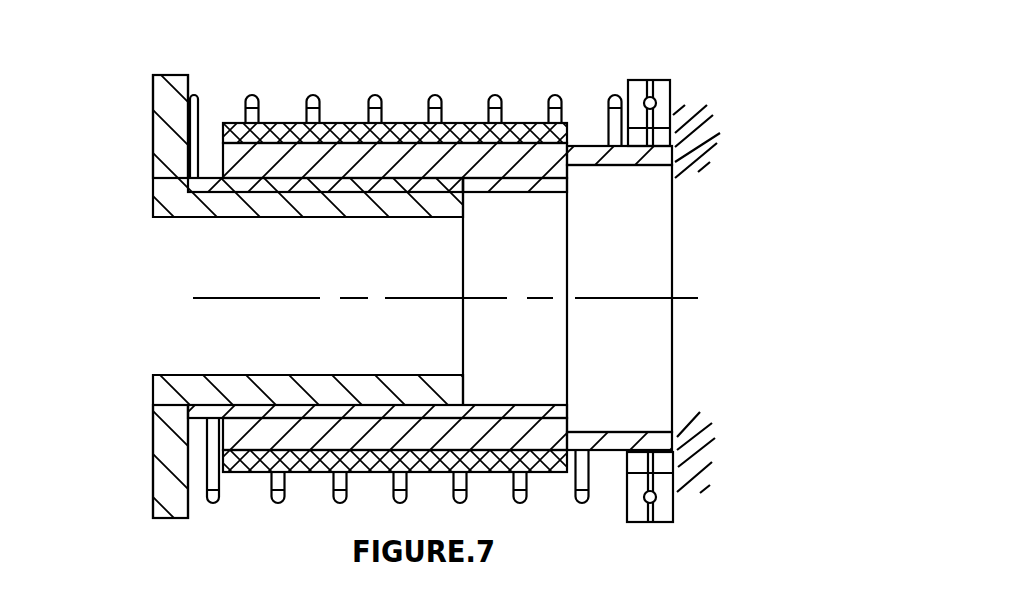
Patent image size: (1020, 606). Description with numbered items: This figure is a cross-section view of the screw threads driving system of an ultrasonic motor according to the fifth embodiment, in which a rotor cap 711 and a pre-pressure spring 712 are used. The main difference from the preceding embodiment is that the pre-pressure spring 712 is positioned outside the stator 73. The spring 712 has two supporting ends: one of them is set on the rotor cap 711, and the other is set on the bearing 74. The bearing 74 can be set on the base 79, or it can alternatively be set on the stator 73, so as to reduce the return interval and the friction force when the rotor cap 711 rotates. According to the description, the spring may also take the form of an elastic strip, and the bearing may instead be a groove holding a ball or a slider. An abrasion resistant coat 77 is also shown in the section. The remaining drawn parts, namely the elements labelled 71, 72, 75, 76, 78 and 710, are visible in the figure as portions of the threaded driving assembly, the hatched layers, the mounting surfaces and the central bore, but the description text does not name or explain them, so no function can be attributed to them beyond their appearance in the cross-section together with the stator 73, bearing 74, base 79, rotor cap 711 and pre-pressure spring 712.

The tube body 71 is at (298, 203).
The outer crosshatched sleeve layer 72 is at (373, 138).
The stator 73 is at (450, 157).
The bearing 74 is at (638, 118).
The upper mounting surface 75 is at (707, 113).
The end block 76 is at (660, 207).
The abrasion resistant coat 77 is at (480, 192).
The inner cavity 78 is at (535, 383).
The base 79 is at (690, 450).
The bore 710 is at (240, 367).
The rotor cap 711 is at (175, 105).
The pre-pressure spring 712 is at (247, 97).